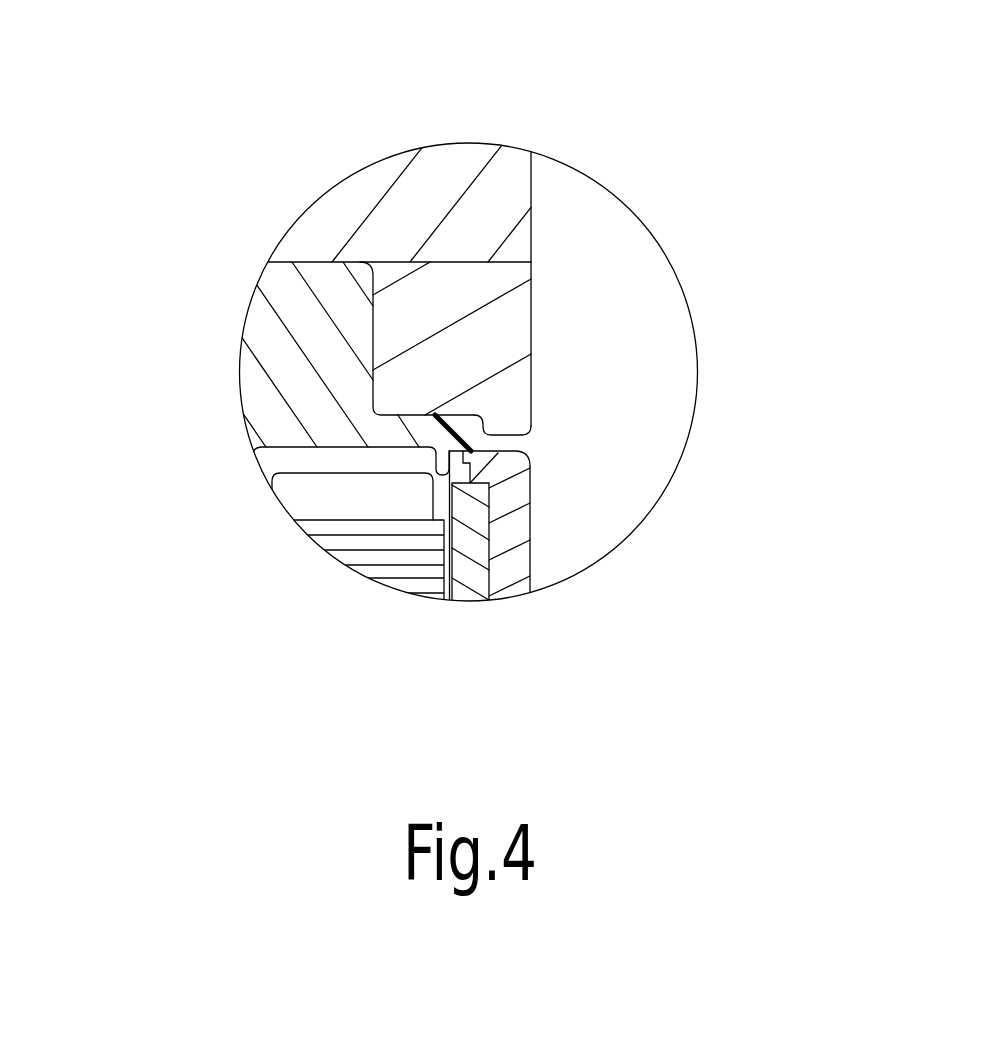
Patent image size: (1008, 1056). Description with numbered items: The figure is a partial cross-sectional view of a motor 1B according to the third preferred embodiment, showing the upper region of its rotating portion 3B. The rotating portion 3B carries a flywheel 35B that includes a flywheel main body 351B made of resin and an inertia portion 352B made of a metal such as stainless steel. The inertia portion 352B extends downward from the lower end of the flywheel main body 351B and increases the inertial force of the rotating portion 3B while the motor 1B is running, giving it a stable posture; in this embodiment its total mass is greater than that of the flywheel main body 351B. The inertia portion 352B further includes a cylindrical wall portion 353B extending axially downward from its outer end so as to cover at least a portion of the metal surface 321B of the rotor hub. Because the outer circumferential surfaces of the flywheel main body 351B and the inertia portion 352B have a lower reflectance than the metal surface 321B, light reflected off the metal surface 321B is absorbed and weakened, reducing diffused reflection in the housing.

The motor 1B is at (88, 63).
The rotating portion 3B is at (268, 104).
The flywheel 35B is at (564, 252).
The flywheel main body 351B is at (483, 208).
The inertia portion 352B is at (455, 294).
The wall portion 353B is at (505, 422).
The metal surface 321B is at (466, 444).